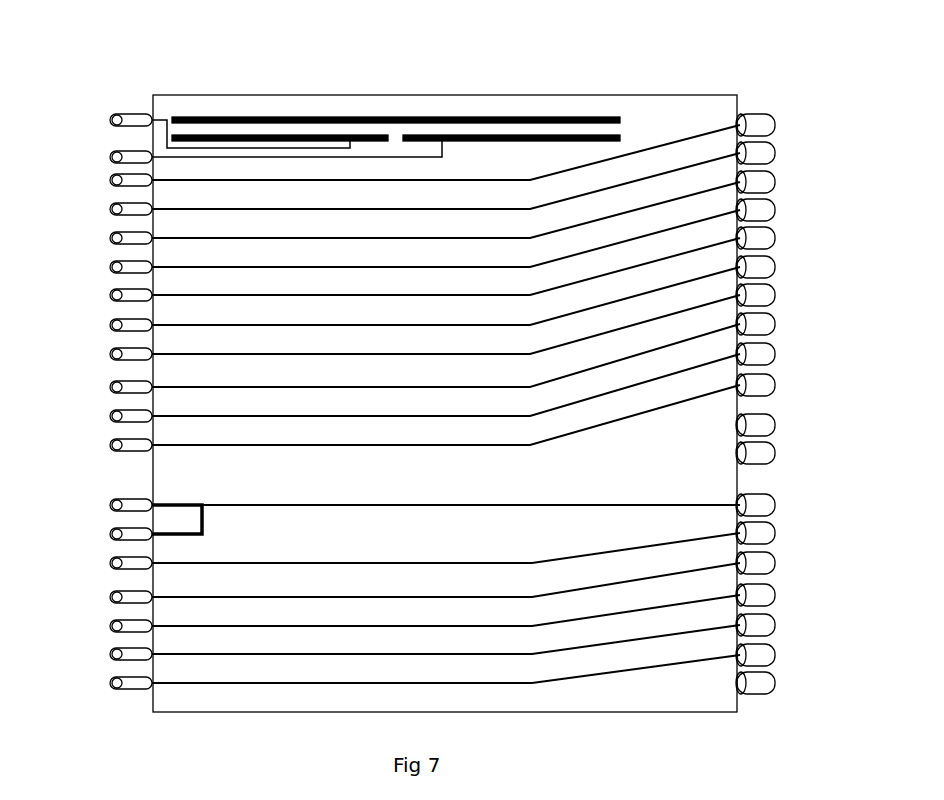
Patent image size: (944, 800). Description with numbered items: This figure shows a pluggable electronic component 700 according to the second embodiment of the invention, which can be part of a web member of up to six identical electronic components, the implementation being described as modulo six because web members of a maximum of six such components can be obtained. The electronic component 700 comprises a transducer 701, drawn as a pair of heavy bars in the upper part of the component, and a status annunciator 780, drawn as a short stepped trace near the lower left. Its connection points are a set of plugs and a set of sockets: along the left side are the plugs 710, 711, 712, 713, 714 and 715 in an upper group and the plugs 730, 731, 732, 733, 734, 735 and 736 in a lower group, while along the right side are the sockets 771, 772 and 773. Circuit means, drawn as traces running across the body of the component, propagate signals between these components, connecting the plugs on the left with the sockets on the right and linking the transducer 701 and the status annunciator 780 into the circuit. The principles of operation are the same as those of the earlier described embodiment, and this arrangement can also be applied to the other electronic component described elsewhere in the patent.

The electronic component 700 is at (633, 88).
The transducer 701 is at (347, 110).
The plug 710 is at (107, 152).
The plug 711 is at (107, 208).
The plug 712 is at (107, 265).
The plug 713 is at (105, 323).
The plug 714 is at (108, 353).
The plug 715 is at (105, 413).
The plug 730 is at (103, 505).
The plug 731 is at (103, 533).
The plug 732 is at (103, 562).
The plug 733 is at (103, 597).
The plug 734 is at (103, 626).
The plug 735 is at (103, 654).
The plug 736 is at (103, 682).
The socket 771 is at (784, 385).
The socket 772 is at (783, 653).
The socket 773 is at (781, 428).
The status annunciator 780 is at (210, 530).